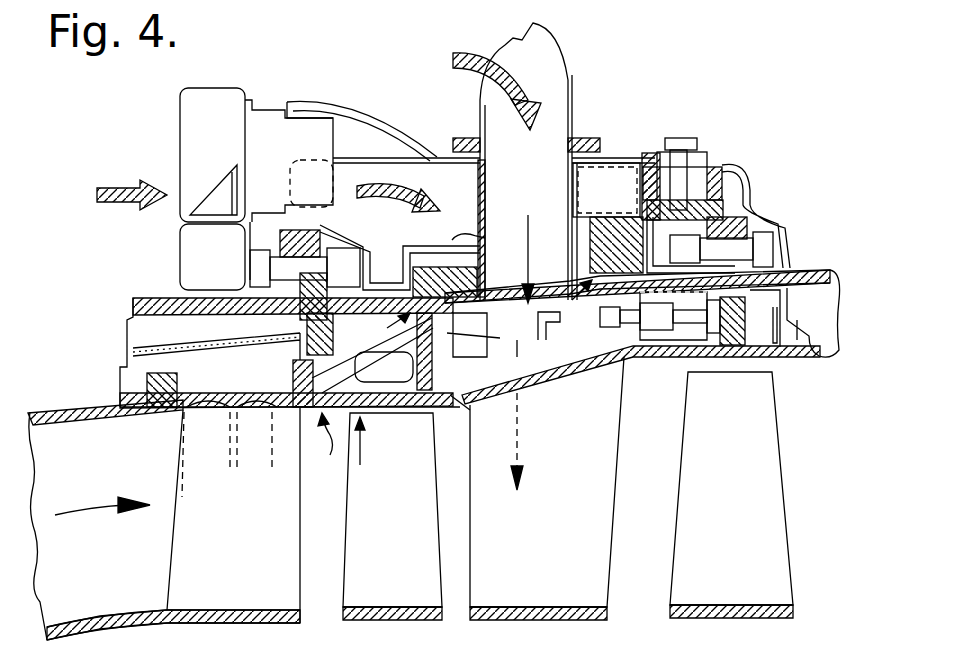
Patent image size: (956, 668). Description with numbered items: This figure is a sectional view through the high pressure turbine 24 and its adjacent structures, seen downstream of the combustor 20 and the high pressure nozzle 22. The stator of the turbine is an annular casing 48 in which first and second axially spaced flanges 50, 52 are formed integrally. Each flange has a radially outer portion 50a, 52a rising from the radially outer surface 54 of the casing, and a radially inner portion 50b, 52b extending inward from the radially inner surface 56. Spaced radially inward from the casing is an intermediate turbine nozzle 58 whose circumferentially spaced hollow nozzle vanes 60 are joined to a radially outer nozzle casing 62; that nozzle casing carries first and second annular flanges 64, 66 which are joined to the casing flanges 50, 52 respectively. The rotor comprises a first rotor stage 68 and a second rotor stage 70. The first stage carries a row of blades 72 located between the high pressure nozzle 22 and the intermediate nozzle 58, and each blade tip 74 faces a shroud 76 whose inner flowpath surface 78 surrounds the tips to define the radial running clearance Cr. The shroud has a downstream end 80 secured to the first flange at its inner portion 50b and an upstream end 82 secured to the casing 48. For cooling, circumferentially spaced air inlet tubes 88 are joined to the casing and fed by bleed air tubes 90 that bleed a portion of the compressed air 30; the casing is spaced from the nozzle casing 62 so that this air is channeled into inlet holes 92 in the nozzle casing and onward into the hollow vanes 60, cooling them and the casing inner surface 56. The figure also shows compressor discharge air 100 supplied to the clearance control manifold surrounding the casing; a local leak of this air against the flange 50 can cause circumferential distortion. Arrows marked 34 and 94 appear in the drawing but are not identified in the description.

The combustor 20 is at (114, 560).
The high pressure nozzle 22 is at (249, 560).
The high pressure turbine 24 is at (792, 481).
The compressed air 30 is at (472, 54).
The hot combustion gas flow 34 is at (102, 500).
The HPT annular casing 48 is at (374, 159).
The first annular flange 50 is at (422, 250).
The radially outer portion of first flange 50a is at (491, 236).
The radially inner portion of first flange 50b is at (286, 340).
The second annular flange 52 is at (605, 225).
The radially outer portion of second flange 52a is at (587, 213).
The radially inner portion of second flange 52b is at (649, 321).
The radially outer surface of casing 54 is at (390, 287).
The radially inner surface of casing 56 is at (567, 297).
The intermediate turbine nozzle 58 is at (460, 609).
The hollow nozzle vanes 60 is at (551, 560).
The nozzle casing 62 is at (545, 380).
The first annular flange of nozzle casing 64 is at (460, 412).
The second annular flange of nozzle casing 66 is at (627, 387).
The first rotor stage 68 is at (336, 613).
The second rotor stage 70 is at (793, 605).
The blades 72 is at (407, 560).
The blade tip 74 is at (360, 458).
The shroud 76 is at (302, 408).
The inner flowpath surface 78 is at (380, 413).
The downstream end of shroud 80 is at (415, 378).
The upstream end of shroud 82 is at (303, 410).
The air inlet tubes 88 is at (600, 140).
The bleed air tubes 90 is at (572, 70).
The inlet holes 92 is at (503, 393).
The purge air flow 94 is at (531, 337).
The compressor discharge air 100 is at (116, 180).
The running clearance Cr is at (321, 447).